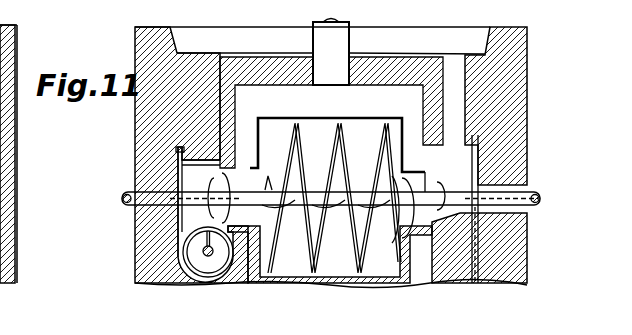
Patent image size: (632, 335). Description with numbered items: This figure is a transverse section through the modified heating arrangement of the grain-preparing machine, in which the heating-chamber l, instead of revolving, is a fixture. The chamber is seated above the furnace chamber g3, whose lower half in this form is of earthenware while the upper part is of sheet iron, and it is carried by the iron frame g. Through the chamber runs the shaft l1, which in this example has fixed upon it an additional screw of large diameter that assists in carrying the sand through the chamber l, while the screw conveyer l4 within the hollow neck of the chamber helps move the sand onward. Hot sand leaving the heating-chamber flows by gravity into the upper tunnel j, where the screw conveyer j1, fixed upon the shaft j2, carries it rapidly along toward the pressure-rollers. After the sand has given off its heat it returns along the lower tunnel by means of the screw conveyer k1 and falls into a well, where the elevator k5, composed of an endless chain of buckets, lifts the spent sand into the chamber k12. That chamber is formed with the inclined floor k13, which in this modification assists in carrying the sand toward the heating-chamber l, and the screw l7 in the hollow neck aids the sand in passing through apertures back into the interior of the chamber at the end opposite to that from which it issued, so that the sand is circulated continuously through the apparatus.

The screw conveyer k1 is at (27, 0).
The elevator k5 is at (520, 257).
The chamber g3 is at (0, 112).
The side casing wall g is at (0, 130).
The shaft l1 is at (0, 165).
The heating-cylinder or heating-chamber l is at (0, 237).
The screw conveyer l4 is at (207, 213).
The screw conveyer j1 is at (206, 250).
The shaft j2 is at (225, 268).
The tunnel or chamber j is at (165, 264).
The chamber k12 is at (458, 157).
The screw l7 is at (432, 188).
The inclined or curved floor k13 is at (432, 222).